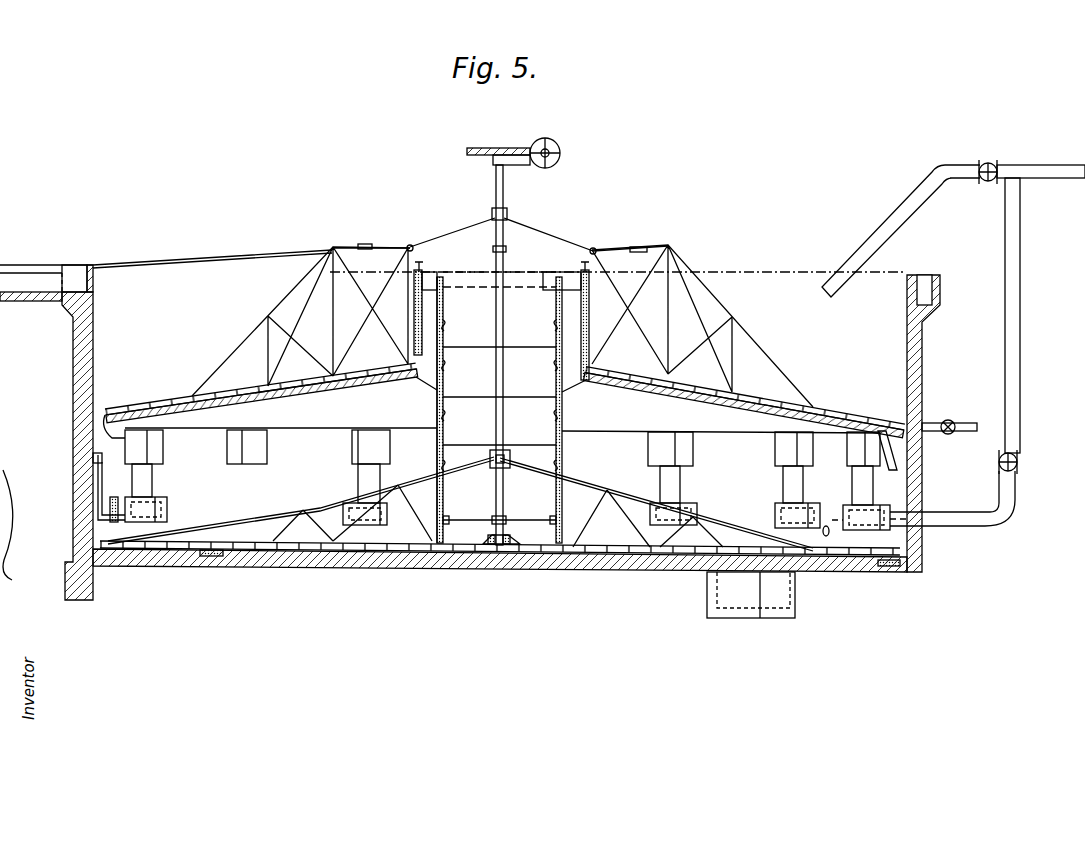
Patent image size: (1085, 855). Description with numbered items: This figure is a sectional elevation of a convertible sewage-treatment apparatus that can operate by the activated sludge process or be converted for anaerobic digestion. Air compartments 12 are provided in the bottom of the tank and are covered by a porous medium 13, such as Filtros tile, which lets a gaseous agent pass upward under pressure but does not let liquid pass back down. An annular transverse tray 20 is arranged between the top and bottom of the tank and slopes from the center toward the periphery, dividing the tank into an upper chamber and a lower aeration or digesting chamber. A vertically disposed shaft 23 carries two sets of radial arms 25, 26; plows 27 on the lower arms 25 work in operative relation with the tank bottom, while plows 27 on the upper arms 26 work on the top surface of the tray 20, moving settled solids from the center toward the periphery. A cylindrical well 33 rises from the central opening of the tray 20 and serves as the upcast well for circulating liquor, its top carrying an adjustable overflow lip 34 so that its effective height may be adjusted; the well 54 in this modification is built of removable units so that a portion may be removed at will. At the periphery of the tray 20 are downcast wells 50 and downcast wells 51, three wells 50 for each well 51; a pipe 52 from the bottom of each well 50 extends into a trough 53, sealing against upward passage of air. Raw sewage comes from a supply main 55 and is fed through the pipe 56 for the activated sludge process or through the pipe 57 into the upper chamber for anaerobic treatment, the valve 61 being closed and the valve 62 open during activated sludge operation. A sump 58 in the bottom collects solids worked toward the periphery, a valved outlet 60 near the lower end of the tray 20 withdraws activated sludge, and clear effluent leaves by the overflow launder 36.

The air compartment 12 is at (890, 570).
The porous medium 13 is at (870, 565).
The transverse tray 20 is at (323, 418).
The shaft 23 is at (503, 374).
The radial arms 25 is at (613, 545).
The radial arms 26 is at (174, 398).
The plows 27 is at (593, 560).
The cylindrical well 33 is at (418, 307).
The adjustable overflow lip 34 is at (433, 283).
The overflow launder 36 is at (929, 277).
The downcast wells 50 is at (773, 454).
The downcast wells 51 is at (257, 452).
The pipe 52 is at (852, 483).
The trough 53 is at (773, 509).
The removable well 54 is at (437, 392).
The supply main 55 is at (1046, 165).
The feed pipe 56 is at (952, 520).
The feed pipe 57 is at (892, 212).
The sump 58 is at (728, 597).
The valved outlet 60 is at (935, 420).
The valve 61 is at (988, 162).
The valve 62 is at (999, 465).